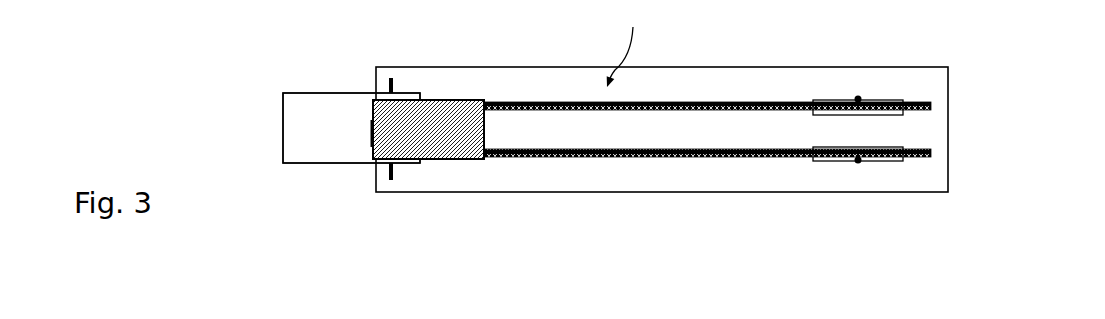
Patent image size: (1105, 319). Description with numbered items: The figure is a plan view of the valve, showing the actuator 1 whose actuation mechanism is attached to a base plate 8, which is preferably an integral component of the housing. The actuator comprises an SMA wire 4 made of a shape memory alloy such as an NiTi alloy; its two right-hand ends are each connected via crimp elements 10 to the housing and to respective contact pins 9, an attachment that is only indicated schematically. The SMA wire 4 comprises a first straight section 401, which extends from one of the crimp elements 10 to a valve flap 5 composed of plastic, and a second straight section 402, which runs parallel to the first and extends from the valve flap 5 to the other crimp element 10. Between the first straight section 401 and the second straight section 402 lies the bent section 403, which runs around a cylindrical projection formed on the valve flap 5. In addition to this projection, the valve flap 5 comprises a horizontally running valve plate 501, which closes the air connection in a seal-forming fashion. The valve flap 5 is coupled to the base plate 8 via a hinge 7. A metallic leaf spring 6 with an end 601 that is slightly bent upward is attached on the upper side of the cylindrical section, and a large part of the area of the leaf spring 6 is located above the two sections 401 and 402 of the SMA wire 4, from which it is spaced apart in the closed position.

The actuator 1 is at (623, 46).
The SMA wire 4 is at (682, 103).
The first straight section 401 is at (743, 103).
The second straight section 402 is at (647, 157).
The bent section 403 is at (371, 128).
The valve flap 5 is at (347, 93).
The valve plate 501 is at (332, 163).
The leaf spring 6 is at (447, 99).
The end of the leaf spring 601 is at (486, 117).
The hinge 7 is at (392, 180).
The base plate 8 is at (725, 177).
The contact pins 9 is at (858, 96).
The crimp elements 10 is at (888, 100).